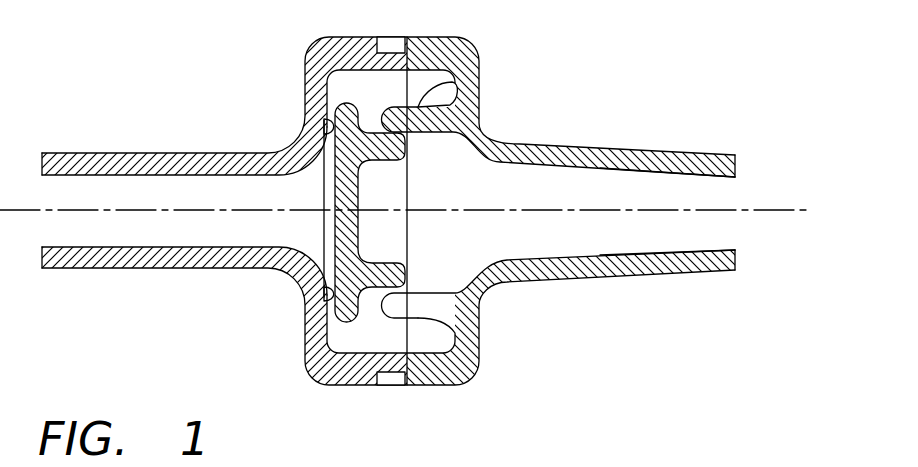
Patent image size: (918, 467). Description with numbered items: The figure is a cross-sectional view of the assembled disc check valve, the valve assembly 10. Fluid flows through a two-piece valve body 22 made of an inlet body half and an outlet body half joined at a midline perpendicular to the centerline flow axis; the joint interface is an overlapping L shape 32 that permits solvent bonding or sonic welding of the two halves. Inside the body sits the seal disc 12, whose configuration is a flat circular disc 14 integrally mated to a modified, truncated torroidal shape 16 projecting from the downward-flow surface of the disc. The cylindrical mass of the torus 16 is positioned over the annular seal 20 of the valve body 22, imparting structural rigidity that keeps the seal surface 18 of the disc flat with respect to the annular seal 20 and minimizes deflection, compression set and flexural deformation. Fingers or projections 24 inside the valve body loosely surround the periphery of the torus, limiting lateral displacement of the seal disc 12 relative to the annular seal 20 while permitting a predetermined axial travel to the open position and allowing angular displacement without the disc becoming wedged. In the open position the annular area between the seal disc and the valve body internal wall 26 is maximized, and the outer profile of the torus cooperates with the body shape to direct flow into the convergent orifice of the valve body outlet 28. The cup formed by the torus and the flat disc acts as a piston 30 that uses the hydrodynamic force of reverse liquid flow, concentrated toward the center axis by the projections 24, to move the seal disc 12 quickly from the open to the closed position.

The valve assembly 10 is at (702, 94).
The seal disc 12 is at (313, 210).
The flat circular disc 14 is at (326, 233).
The torroidal shape 16 is at (390, 264).
The seal surface 18 is at (328, 126).
The annular seal 20 is at (320, 122).
The valve body 22 is at (478, 385).
The projections 24 is at (450, 83).
The valve body internal wall 26 is at (333, 386).
The valve body outlet 28 is at (737, 207).
The piston 30 is at (362, 203).
The overlapping L shape 32 is at (392, 50).